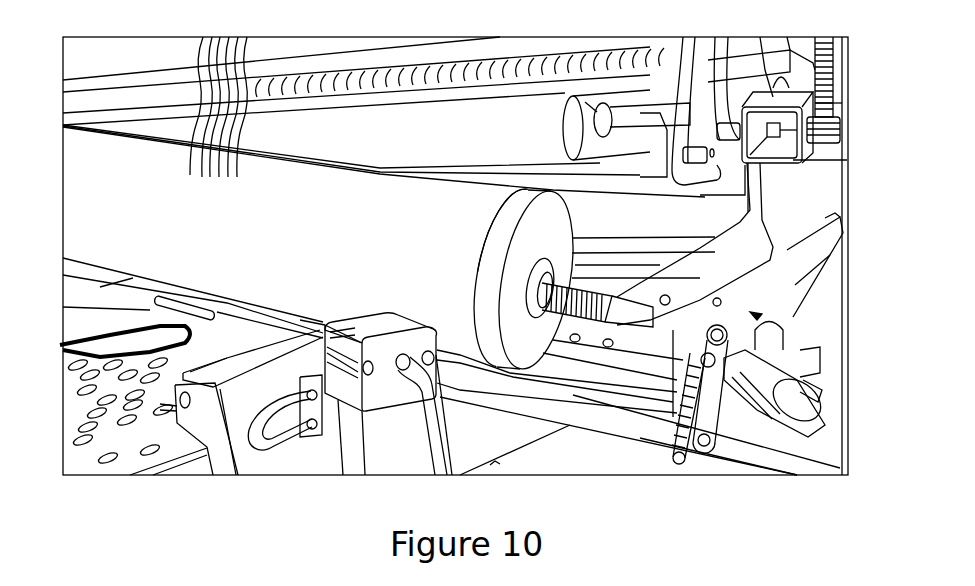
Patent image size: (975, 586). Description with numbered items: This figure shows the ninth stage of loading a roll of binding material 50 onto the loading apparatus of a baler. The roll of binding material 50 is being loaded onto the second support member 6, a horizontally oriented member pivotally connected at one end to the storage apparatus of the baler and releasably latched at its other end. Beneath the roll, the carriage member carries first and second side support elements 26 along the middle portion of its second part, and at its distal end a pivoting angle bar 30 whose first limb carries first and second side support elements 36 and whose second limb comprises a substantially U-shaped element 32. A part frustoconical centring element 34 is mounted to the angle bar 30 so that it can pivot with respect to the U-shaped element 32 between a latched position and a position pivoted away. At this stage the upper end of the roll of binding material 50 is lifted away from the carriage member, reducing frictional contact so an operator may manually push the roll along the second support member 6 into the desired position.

The roll of binding material 50 is at (190, 206).
The first and second side support elements 26 is at (63, 347).
The second support member 6 is at (613, 297).
The U-shaped element 32 is at (740, 312).
The angle bar 30 is at (757, 320).
The centring element 34 is at (815, 413).
The first and second side support elements 36 is at (610, 393).